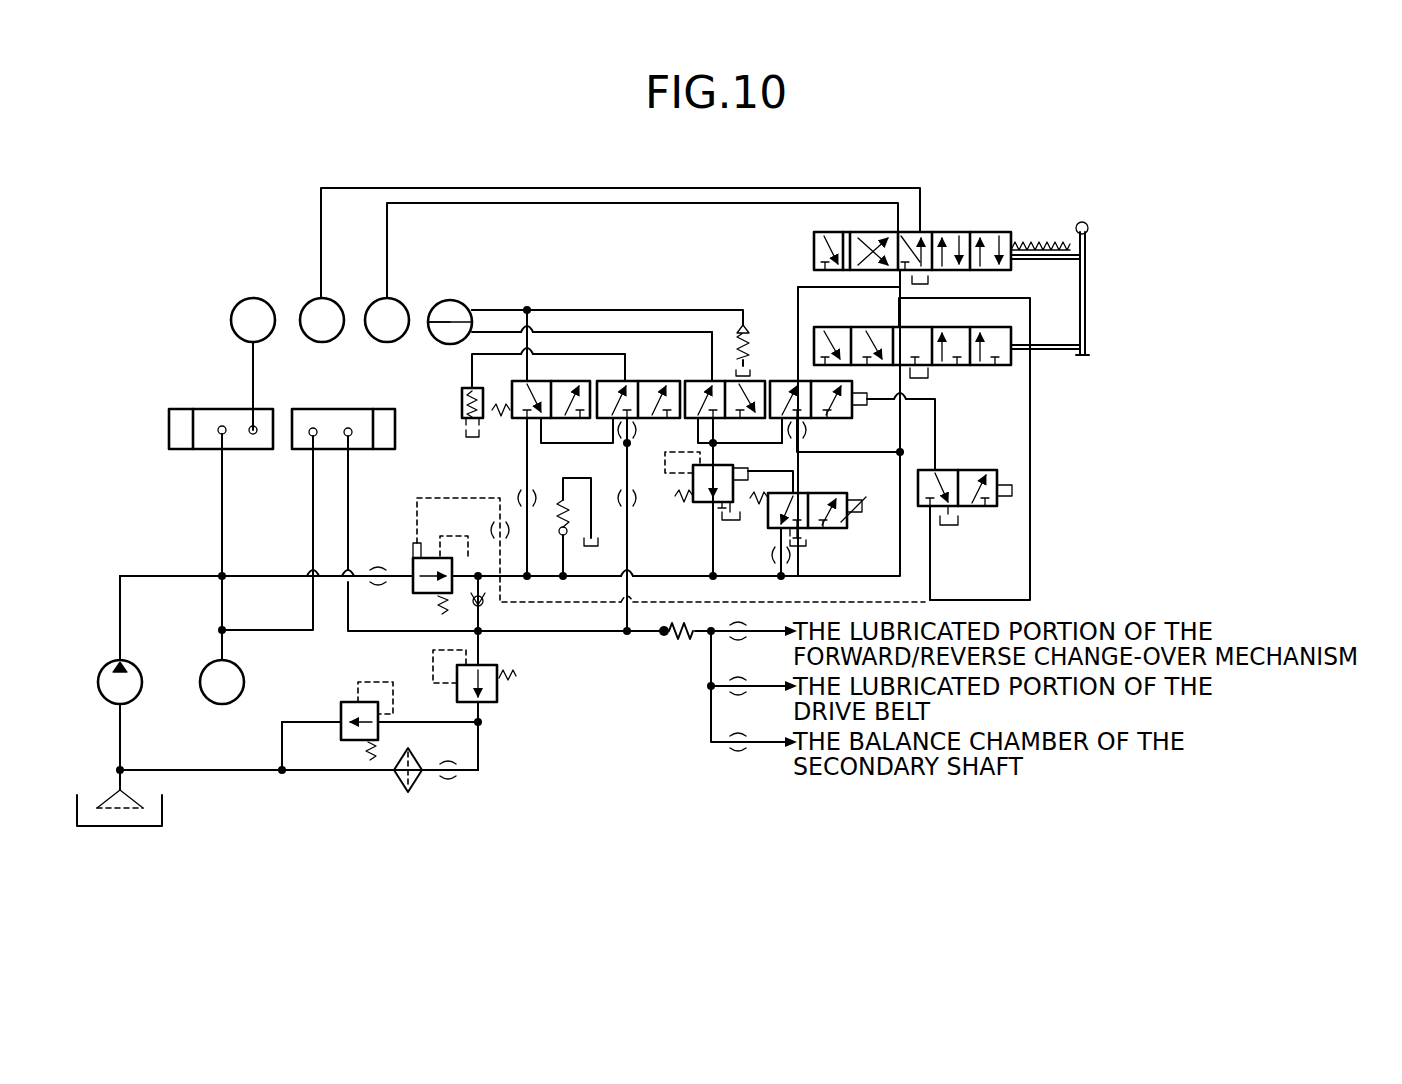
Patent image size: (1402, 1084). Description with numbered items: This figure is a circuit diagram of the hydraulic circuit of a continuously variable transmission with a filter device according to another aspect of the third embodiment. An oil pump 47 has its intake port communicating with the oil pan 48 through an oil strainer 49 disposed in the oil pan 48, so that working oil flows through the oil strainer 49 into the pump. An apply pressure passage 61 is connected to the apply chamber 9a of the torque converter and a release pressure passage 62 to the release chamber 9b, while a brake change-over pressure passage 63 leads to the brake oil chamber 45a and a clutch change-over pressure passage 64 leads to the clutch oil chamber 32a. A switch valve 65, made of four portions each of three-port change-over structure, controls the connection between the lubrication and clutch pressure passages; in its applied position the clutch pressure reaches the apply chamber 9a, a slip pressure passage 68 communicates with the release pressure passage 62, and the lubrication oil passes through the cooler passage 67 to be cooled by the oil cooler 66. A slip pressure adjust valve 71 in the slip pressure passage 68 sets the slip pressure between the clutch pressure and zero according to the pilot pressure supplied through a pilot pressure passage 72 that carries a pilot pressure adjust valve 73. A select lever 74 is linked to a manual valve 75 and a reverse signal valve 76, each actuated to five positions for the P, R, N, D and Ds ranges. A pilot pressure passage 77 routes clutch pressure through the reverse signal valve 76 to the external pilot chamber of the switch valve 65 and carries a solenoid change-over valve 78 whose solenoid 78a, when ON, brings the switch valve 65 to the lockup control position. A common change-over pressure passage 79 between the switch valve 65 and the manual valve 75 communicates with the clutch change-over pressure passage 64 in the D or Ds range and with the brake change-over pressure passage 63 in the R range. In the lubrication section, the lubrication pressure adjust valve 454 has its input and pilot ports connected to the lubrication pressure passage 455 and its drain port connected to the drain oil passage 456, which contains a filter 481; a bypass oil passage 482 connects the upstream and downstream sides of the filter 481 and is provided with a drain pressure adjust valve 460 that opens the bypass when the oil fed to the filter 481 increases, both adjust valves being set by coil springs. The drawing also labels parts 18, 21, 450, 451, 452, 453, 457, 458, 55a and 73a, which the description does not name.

The engine control unit (sensor/controller) 18 is at (253, 320).
The brake oil chamber 45a is at (322, 320).
The clutch oil chamber 32a is at (387, 320).
The apply chamber 9a is at (455, 300).
The release chamber 9b is at (438, 344).
The apply pressure passage 61 is at (522, 309).
The release pressure passage 62 is at (588, 330).
The brake change-over pressure passage 63 is at (640, 189).
The clutch change-over pressure passage 64 is at (700, 204).
The switch valve 65 is at (652, 378).
The oil cooler 66 is at (461, 410).
The cooler passage 67 is at (610, 354).
The slip pressure passage 68 is at (745, 444).
The slip pressure adjust valve 71 is at (711, 506).
The pilot pressure passage 72 is at (800, 492).
The pilot pressure adjust valve 73 is at (798, 540).
The proportional solenoid 73a is at (856, 520).
The select lever 74 is at (1078, 288).
The manual valve 75 is at (813, 252).
The reverse signal valve 76 is at (813, 345).
The pilot pressure passage 77 is at (1029, 402).
The solenoid change-over valve 78 is at (917, 490).
The solenoid 78a is at (1005, 484).
The common change-over pressure passage 79 is at (797, 296).
The control line 453 is at (252, 380).
The primary pulley cylinder 452 is at (255, 409).
The secondary pulley cylinder / oil passage 451 is at (358, 409).
The main oil passage 450 is at (158, 575).
The pressure regulating valve 457 is at (412, 558).
The oil passage 458 is at (645, 575).
The relief valve 55a is at (618, 445).
The oil pump 47 is at (143, 668).
The forward/reverse change-over mechanism 21 is at (222, 682).
The bypass oil passage 482 is at (300, 721).
The drain pressure adjust valve 460 is at (340, 740).
The filter 481 is at (395, 782).
The oil pan 48 is at (162, 800).
The oil strainer 49 is at (116, 790).
The lubrication pressure adjust valve 454 is at (498, 684).
The lubrication pressure passage 455 is at (588, 632).
The drain oil passage 456 is at (480, 745).